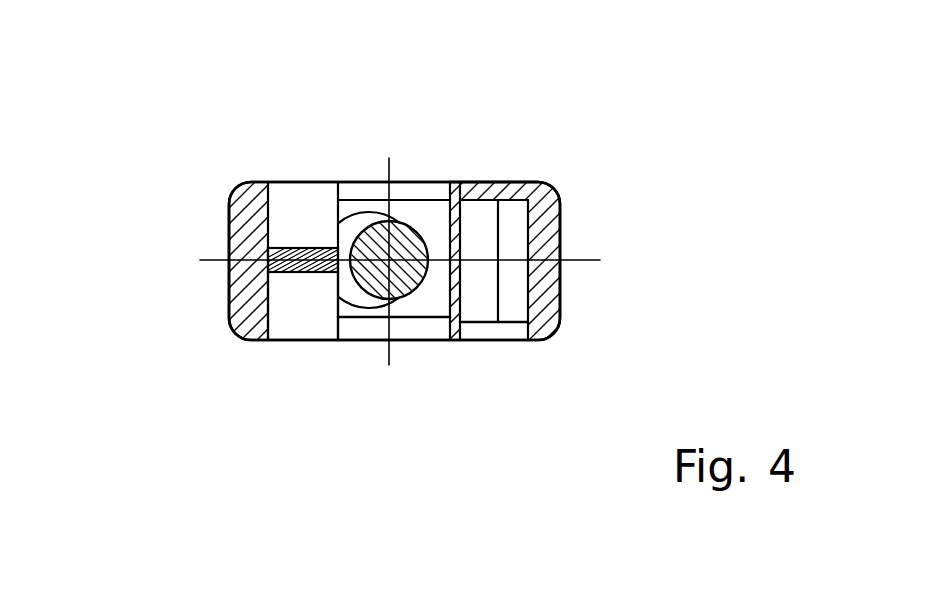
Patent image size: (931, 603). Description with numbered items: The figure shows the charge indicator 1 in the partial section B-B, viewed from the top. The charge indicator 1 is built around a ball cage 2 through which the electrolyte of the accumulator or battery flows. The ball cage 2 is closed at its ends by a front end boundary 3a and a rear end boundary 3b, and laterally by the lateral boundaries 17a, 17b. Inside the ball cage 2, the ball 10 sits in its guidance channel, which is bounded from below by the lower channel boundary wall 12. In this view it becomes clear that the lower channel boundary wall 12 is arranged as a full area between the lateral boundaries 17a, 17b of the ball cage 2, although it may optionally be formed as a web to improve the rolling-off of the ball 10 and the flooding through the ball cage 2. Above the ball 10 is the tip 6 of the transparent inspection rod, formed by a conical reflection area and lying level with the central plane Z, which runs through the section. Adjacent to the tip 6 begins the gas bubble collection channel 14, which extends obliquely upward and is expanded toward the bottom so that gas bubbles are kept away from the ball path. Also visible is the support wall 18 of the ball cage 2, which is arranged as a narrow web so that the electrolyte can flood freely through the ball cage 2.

The charge indicator 1 is at (163, 160).
The ball cage 2 is at (630, 100).
The front end boundary 3a is at (230, 292).
The rear end boundary 3b is at (562, 235).
The tip 6 is at (406, 292).
The ball 10 is at (350, 297).
The lower channel boundary wall 12 is at (422, 300).
The gas bubble collection channel 14 is at (311, 318).
The lateral boundary 17a is at (528, 177).
The lateral boundary 17b is at (503, 327).
The support wall 18 is at (298, 272).
The central plane Z is at (381, 261).